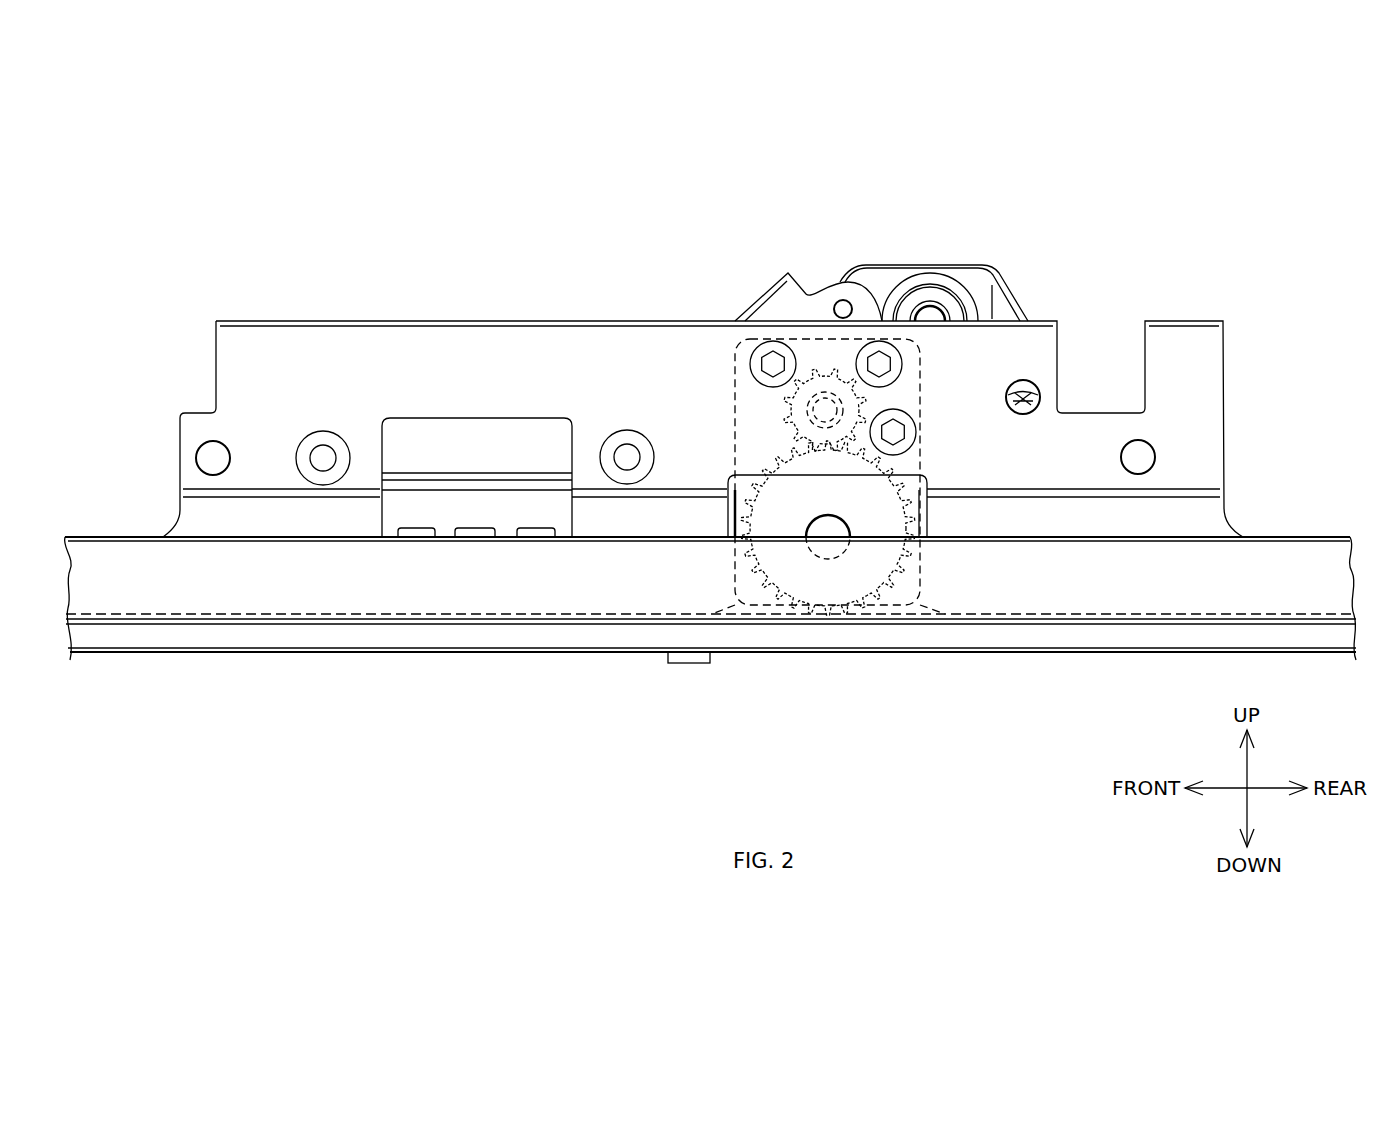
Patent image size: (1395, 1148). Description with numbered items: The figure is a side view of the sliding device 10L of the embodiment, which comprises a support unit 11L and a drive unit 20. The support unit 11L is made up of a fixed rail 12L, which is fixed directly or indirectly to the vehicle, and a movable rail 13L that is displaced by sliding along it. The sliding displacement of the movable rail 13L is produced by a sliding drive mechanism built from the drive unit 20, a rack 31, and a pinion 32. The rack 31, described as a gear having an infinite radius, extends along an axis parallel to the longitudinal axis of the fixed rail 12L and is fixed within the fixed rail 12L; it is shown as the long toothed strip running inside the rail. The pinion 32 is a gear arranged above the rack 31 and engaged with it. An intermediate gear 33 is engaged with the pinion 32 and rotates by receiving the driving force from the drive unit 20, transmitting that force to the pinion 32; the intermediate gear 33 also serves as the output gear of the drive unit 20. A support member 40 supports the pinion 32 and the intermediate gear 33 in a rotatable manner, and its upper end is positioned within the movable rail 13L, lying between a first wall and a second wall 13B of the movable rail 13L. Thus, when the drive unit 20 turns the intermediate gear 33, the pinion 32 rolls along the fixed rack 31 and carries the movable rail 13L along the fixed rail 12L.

The sliding device 10L is at (975, 233).
The support unit 11L is at (120, 536).
The fixed rail 12L is at (543, 652).
The movable rail 13L is at (462, 320).
The second wall 13B is at (542, 348).
The drive unit 20 is at (1013, 282).
The rack 31 is at (1283, 612).
The pinion 32 is at (735, 548).
The intermediate gear 33 is at (820, 368).
The support member 40 is at (735, 397).